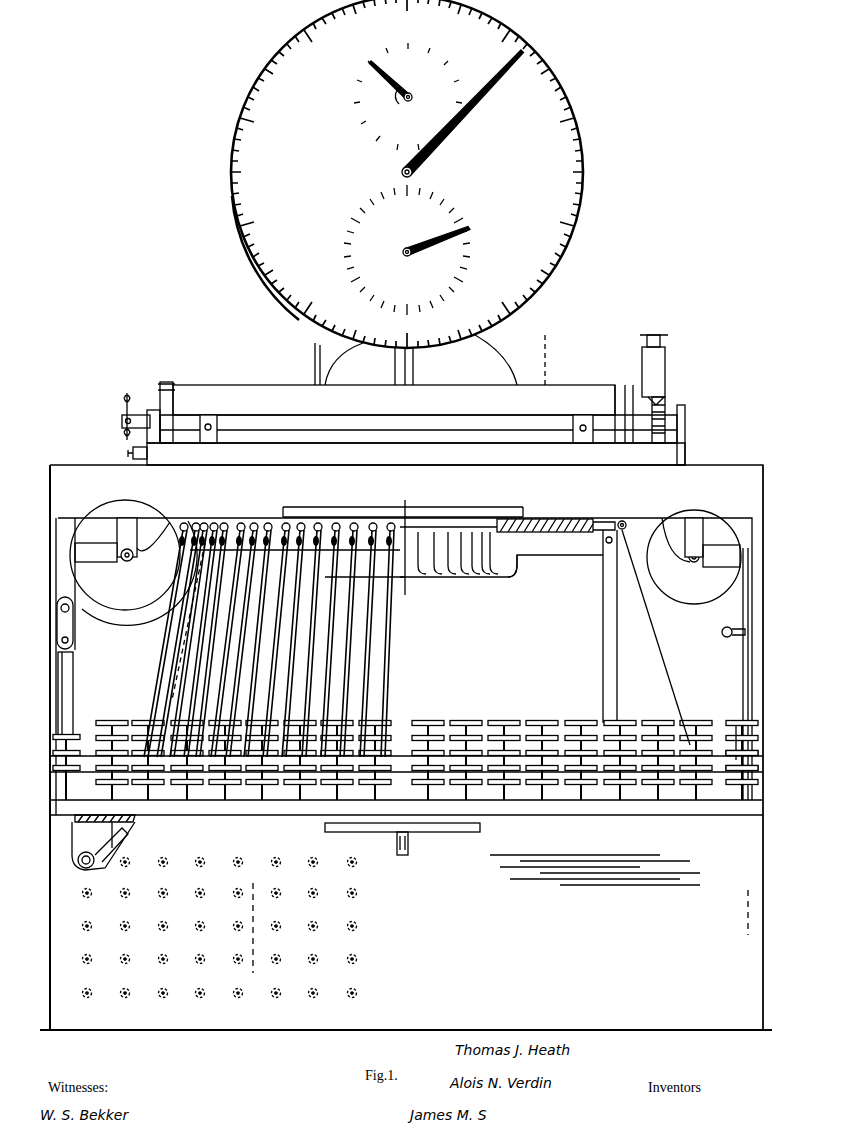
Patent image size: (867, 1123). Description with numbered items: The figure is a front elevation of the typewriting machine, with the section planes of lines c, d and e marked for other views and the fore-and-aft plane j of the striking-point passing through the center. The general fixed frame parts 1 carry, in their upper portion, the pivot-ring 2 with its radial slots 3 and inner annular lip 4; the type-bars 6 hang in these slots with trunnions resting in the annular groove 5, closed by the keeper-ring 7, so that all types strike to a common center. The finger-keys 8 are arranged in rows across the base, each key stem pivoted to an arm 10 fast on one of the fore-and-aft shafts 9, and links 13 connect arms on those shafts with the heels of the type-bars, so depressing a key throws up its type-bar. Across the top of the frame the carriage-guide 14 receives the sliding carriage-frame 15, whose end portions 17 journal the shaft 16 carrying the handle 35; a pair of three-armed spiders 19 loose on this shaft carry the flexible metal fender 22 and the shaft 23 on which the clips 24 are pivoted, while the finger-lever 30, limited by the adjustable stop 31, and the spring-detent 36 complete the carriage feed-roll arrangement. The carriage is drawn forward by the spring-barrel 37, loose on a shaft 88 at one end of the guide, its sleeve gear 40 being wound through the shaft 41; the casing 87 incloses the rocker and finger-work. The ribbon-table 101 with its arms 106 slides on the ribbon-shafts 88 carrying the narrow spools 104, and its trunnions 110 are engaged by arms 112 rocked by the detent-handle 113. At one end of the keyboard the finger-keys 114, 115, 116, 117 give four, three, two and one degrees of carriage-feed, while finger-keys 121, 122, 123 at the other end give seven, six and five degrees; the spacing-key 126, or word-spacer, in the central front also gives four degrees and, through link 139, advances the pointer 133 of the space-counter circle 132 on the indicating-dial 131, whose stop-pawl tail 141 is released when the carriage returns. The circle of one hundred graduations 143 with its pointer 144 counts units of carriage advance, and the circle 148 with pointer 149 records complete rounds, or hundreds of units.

The general fixed frame parts 1 is at (763, 656).
The pivot-ring 2 is at (546, 518).
The radial slots 3 is at (470, 572).
The inner annular lip 4 is at (513, 577).
The annular groove 5 is at (622, 520).
The type-bars 6 is at (603, 627).
The keeper-ring 7 is at (606, 530).
The finger-keys 8 is at (528, 720).
The shafts 9 is at (357, 924).
The arm 10 is at (96, 862).
The links 13 is at (150, 660).
The carriage-guide 14 is at (83, 476).
The carriage-frame 15 is at (278, 465).
The shaft 16 is at (120, 420).
The end portions of the carriage 17 is at (152, 410).
The three-armed spiders 19 is at (167, 382).
The flexible metal fender 22 is at (257, 385).
The shaft 23 is at (296, 415).
The clips 24 is at (212, 430).
The finger-lever 30 is at (660, 403).
The adjustable stop 31 is at (668, 352).
The handle 35 is at (130, 392).
The spring-detent 36 is at (147, 454).
The spring-barrel 37 is at (100, 612).
The gear 40 is at (150, 608).
The shaft 41 is at (56, 620).
The casing 87 is at (492, 362).
The ribbon-shafts 88 is at (418, 567).
The ribbon-table 101 is at (150, 520).
The narrow spools 104 is at (405, 555).
The arms 106 is at (95, 545).
The trunnion 110 is at (73, 552).
The arms 112 is at (58, 680).
The detent-handle 113 is at (727, 638).
The finger-key 114 is at (752, 727).
The finger-key 115 is at (733, 740).
The finger-key 116 is at (752, 752).
The finger-key 117 is at (752, 768).
The finger-key 121 is at (53, 737).
The finger-key 122 is at (53, 753).
The finger-key 123 is at (53, 768).
The spacing-key 126 is at (428, 833).
The indicating-dial 131 is at (277, 294).
The circle of graduations 132 is at (368, 207).
The pointer 133 is at (442, 248).
The link 139 is at (313, 358).
The tail 141 is at (412, 372).
The circle of one hundred graduations 143 is at (235, 162).
The pointer 144 is at (472, 128).
The circle of graduations 148 is at (366, 104).
The pointer 149 is at (408, 96).
The line c is at (549, 351).
The line d is at (249, 918).
The line e is at (619, 895).
The plane j is at (297, 553).